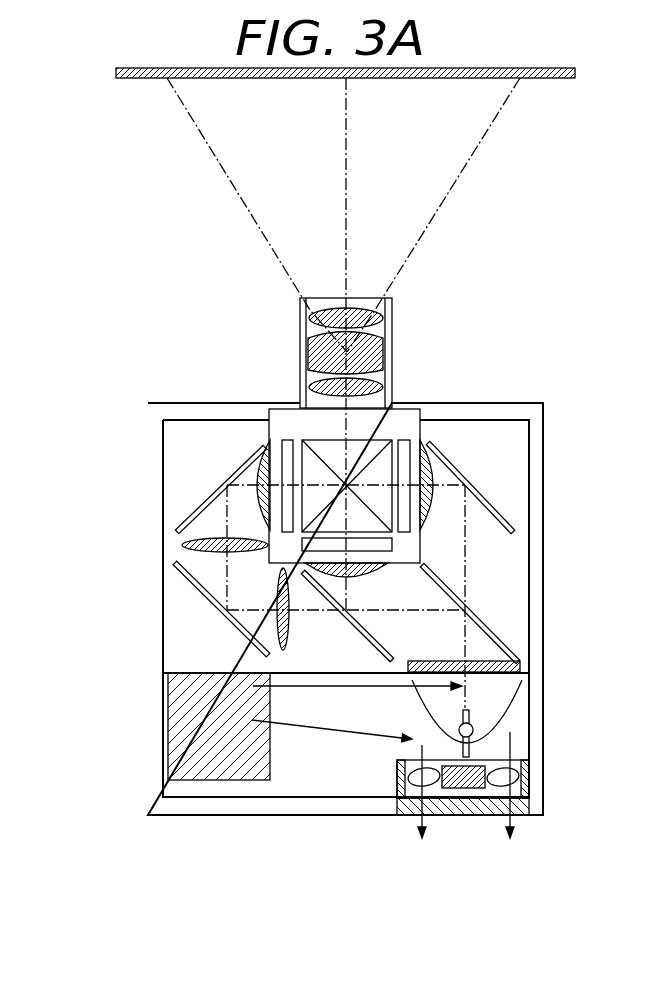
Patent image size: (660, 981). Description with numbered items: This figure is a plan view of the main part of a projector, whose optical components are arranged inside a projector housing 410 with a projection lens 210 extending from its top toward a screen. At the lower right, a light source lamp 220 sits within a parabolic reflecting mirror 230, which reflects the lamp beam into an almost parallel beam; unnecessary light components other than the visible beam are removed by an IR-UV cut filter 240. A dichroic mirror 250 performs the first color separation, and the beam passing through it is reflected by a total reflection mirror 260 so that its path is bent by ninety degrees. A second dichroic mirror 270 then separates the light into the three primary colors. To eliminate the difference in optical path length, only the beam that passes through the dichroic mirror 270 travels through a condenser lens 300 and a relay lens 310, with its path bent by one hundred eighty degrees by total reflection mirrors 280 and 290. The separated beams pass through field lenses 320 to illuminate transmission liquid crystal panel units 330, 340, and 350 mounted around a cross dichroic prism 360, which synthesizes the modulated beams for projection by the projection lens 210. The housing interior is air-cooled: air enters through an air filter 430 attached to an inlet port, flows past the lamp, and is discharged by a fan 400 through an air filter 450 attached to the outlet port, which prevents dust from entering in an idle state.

The projection lens 210 is at (300, 340).
The light source lamp 220 is at (465, 757).
The parabolic reflecting mirror 230 is at (497, 737).
The IR-UV cut filter 240 is at (497, 637).
The dichroic mirror 250 is at (505, 658).
The total reflection mirror 260 is at (463, 478).
The dichroic mirror 270 is at (367, 640).
The total reflection mirror 280 is at (190, 582).
The total reflection mirror 290 is at (190, 508).
The condenser lens 300 is at (273, 620).
The relay lens 310 is at (193, 547).
The field lens 320 is at (257, 468).
The transmission liquid crystal panel unit 330 is at (407, 440).
The transmission liquid crystal panel unit 340 is at (392, 546).
The transmission liquid crystal panel unit 350 is at (280, 440).
The cross dichroic prism 360 is at (373, 445).
The fan 400 is at (397, 780).
The projector housing 410 is at (225, 817).
The air filter 430 is at (172, 720).
The air filter 450 is at (490, 815).